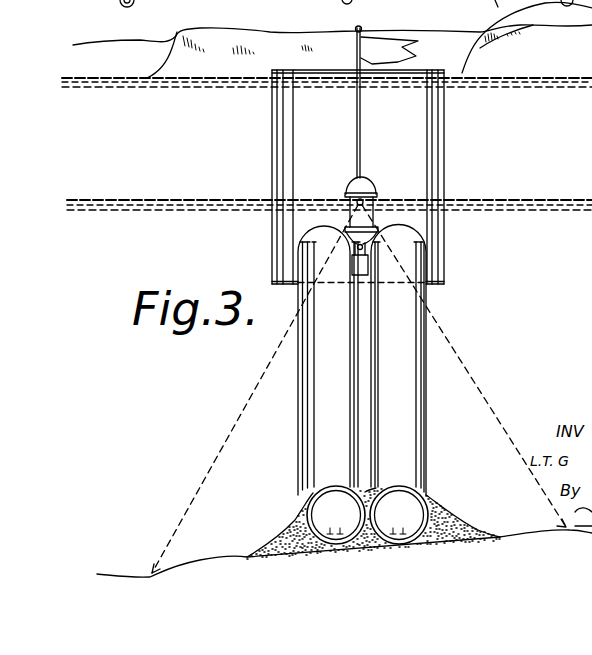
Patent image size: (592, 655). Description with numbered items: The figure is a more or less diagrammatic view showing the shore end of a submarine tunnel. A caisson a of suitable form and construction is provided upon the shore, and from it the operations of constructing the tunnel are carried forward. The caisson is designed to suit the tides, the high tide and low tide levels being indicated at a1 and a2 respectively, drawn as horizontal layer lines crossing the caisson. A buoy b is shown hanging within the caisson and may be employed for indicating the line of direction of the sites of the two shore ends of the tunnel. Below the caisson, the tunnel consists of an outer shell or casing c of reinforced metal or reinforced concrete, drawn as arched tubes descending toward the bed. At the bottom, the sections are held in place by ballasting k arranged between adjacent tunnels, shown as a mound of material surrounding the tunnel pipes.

The caisson a is at (426, 148).
The high tide a1 is at (203, 82).
The low tide a2 is at (168, 198).
The buoy b is at (363, 187).
The outer shell or casing c is at (420, 415).
The ballasting k is at (385, 487).